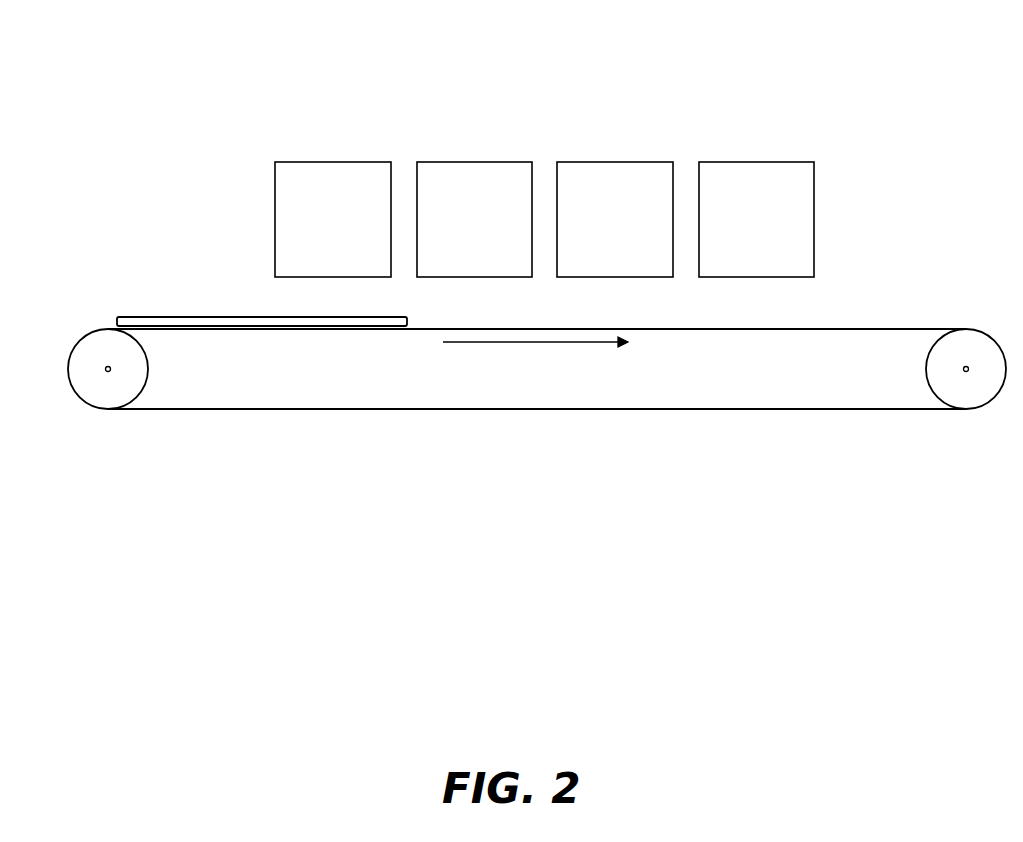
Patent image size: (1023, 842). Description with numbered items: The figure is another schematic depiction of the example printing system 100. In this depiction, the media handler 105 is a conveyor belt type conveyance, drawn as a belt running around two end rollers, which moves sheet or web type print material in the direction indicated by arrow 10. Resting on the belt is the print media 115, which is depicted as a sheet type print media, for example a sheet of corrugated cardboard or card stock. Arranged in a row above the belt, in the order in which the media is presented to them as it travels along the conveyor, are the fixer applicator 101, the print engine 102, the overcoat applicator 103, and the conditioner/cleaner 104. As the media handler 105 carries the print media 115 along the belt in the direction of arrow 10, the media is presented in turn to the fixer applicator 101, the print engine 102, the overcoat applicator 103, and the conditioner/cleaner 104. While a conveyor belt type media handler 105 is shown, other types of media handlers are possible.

The printing system 100 is at (104, 82).
The fixer applicator 101 is at (302, 162).
The print engine 102 is at (449, 162).
The overcoat applicator 103 is at (586, 162).
The conditioner/cleaner 104 is at (738, 162).
The media handler 105 is at (80, 347).
The print media 115 is at (130, 317).
The arrow 10 is at (546, 343).